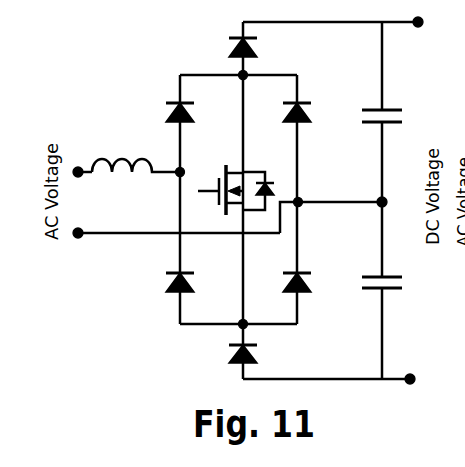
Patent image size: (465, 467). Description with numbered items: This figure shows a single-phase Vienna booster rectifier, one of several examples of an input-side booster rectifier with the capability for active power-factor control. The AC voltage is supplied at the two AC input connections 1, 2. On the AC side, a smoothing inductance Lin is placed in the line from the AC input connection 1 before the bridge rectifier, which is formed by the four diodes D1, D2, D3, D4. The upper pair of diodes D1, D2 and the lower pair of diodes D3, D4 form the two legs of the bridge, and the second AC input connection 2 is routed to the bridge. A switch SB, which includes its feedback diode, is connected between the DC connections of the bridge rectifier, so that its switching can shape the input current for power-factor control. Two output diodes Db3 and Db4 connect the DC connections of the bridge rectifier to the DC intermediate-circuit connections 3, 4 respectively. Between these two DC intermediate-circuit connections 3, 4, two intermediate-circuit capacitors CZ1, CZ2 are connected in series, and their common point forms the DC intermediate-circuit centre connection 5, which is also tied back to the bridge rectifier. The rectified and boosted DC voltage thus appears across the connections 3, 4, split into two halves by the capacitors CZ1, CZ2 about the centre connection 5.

The AC input connection 1 is at (82, 159).
The AC input connection 2 is at (176, 248).
The DC intermediate-circuit connection 3 is at (418, 17).
The DC intermediate-circuit connection 4 is at (414, 370).
The DC intermediate-circuit centre connection 5 is at (354, 200).
The smoothing inductance Lin is at (136, 145).
The diode in the rectifier D1 is at (167, 93).
The diode in the rectifier D2 is at (306, 94).
The diode in the rectifier D3 is at (167, 303).
The diode in the rectifier D4 is at (307, 303).
The output diode of the rectifier Db3 is at (223, 36).
The output diode of the rectifier Db4 is at (224, 359).
The switch in the rectifier SB is at (241, 171).
The intermediate-circuit capacitor CZ1 is at (397, 97).
The intermediate-circuit capacitor CZ2 is at (398, 303).